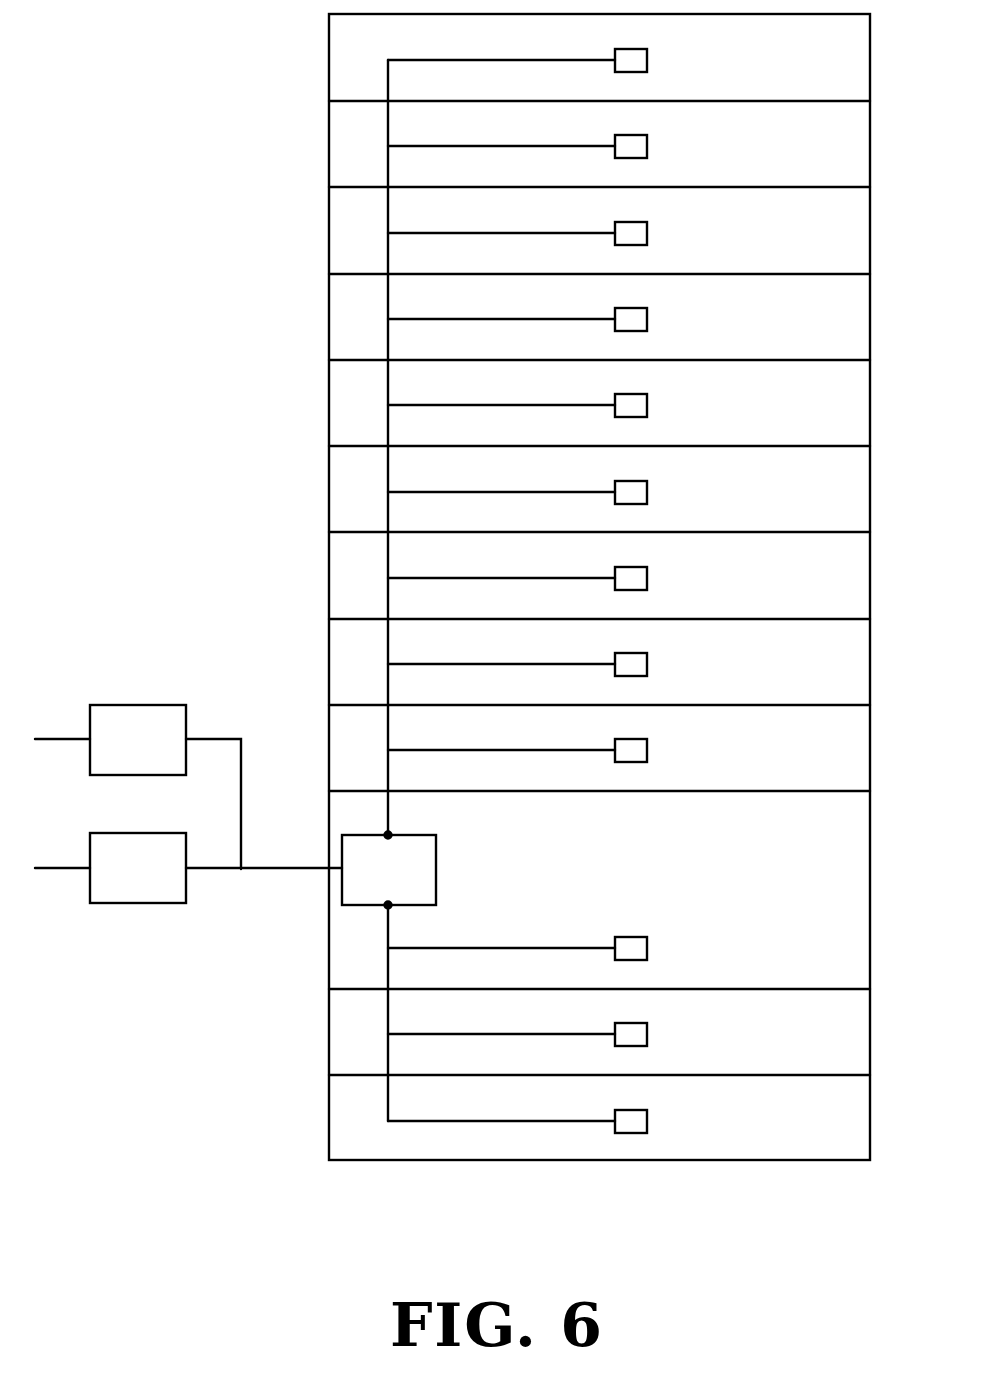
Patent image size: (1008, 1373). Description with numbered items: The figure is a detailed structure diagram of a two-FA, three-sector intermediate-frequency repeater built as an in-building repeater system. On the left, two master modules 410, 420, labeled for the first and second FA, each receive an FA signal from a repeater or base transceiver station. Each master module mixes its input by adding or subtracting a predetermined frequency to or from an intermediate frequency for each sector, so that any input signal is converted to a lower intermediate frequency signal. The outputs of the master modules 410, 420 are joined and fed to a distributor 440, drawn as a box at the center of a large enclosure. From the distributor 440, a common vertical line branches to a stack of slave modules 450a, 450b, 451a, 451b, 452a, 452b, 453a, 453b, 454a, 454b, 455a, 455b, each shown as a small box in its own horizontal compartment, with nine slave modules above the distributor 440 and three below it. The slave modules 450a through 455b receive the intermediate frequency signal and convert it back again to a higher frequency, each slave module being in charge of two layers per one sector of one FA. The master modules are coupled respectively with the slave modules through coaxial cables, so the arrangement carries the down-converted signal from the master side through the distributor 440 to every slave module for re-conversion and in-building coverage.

The master module 410 is at (137, 705).
The master module 420 is at (137, 833).
The distributor 440 is at (436, 869).
The slave module 450a is at (648, 60).
The slave module 450b is at (648, 146).
The slave module 451a is at (648, 233).
The slave module 451b is at (648, 319).
The slave module 452a is at (648, 405).
The slave module 452b is at (648, 492).
The slave module 453a is at (648, 578).
The slave module 453b is at (648, 664).
The slave module 454a is at (648, 750).
The slave module 454b is at (648, 948).
The slave module 455a is at (648, 1034).
The slave module 455b is at (648, 1121).